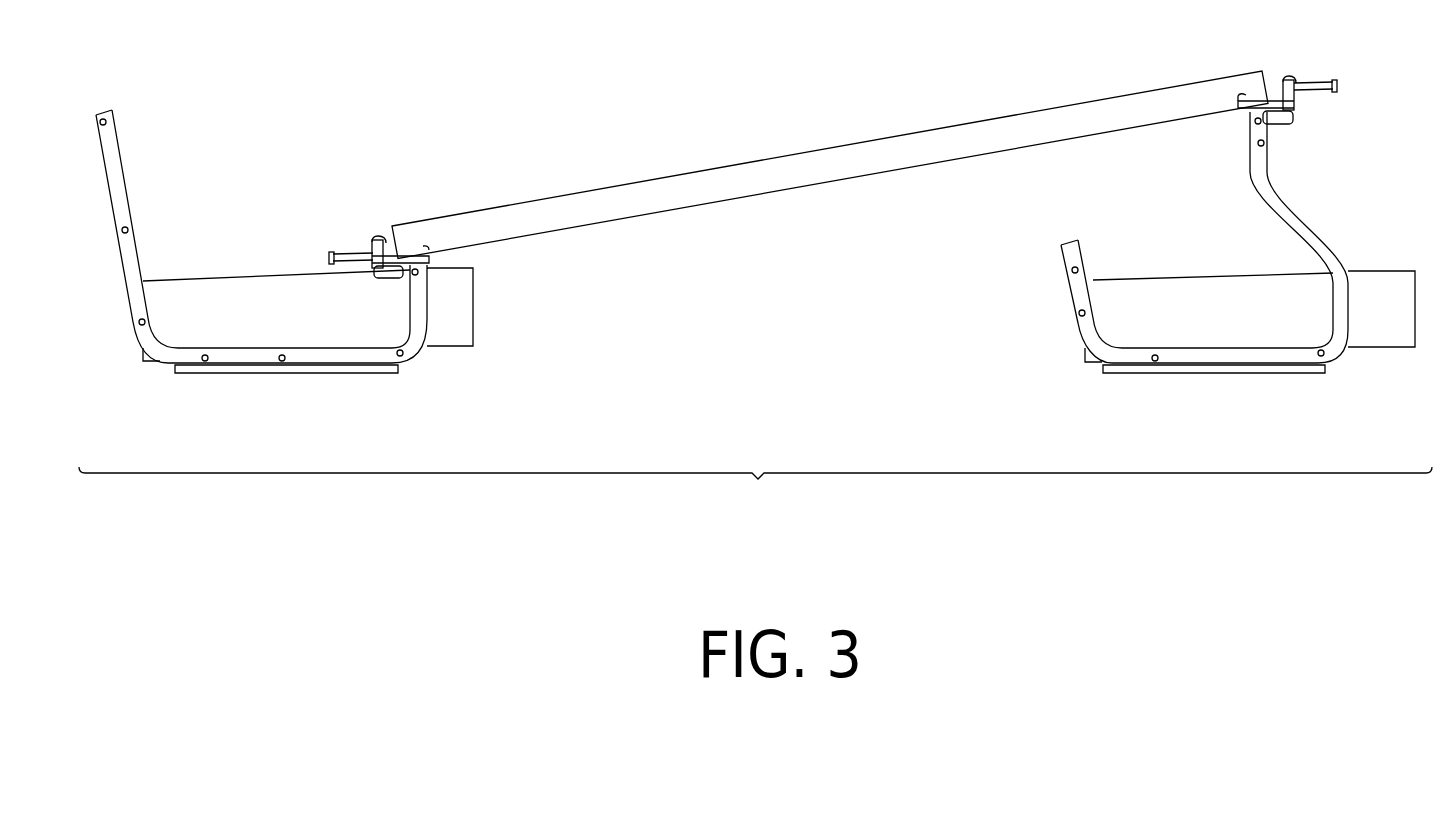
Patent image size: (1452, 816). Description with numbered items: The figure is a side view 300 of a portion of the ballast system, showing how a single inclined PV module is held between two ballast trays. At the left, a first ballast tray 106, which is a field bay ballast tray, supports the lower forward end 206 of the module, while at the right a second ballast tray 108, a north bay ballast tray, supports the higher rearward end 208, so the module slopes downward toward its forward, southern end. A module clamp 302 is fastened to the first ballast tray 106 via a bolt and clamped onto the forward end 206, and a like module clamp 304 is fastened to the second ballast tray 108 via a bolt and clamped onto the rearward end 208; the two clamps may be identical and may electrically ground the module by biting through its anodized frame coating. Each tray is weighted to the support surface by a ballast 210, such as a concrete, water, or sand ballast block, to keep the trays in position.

The first ballast tray 106 is at (110, 112).
The second ballast tray 108 is at (1078, 240).
The forward end 206 is at (383, 196).
The rearward end 208 is at (1259, 52).
The ballast 210 is at (457, 347).
The side view 300 is at (755, 485).
The module clamp 302 is at (372, 215).
The module clamp 304 is at (1294, 58).